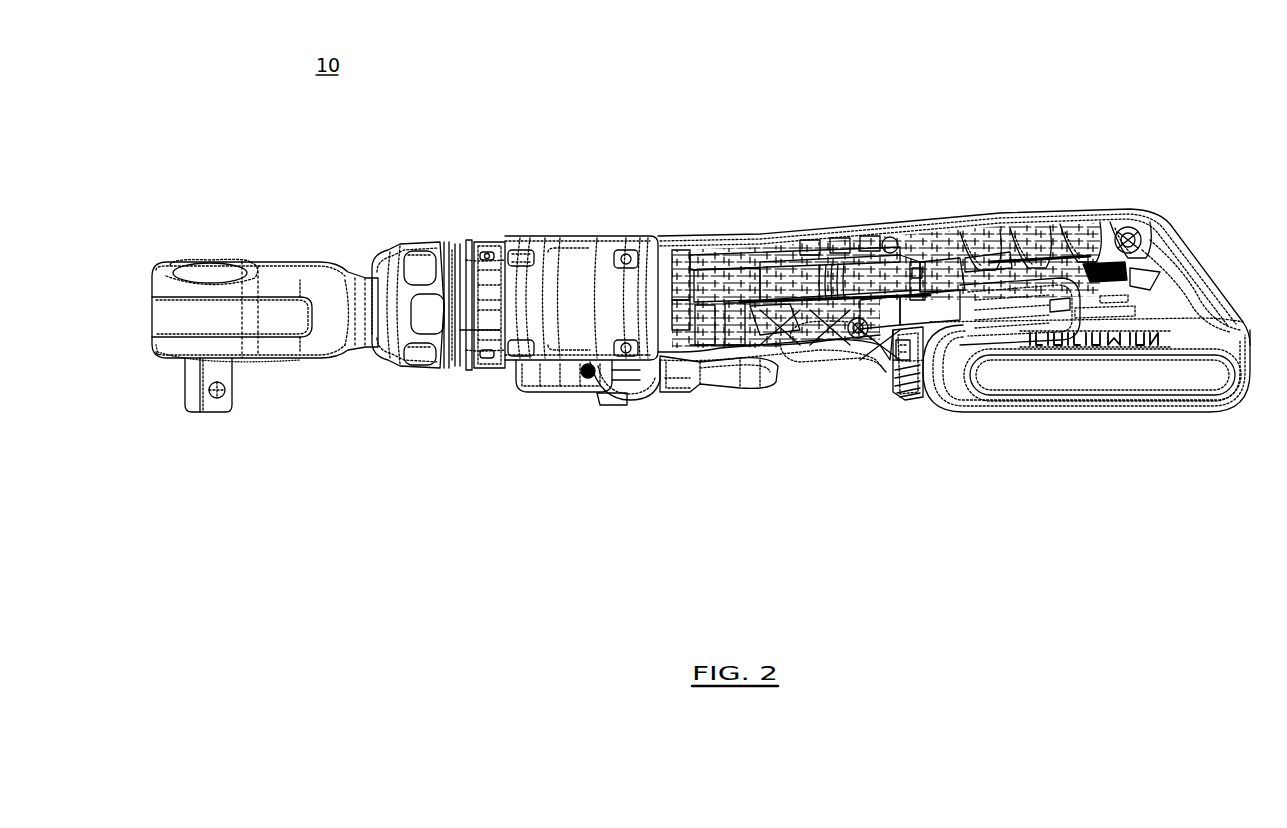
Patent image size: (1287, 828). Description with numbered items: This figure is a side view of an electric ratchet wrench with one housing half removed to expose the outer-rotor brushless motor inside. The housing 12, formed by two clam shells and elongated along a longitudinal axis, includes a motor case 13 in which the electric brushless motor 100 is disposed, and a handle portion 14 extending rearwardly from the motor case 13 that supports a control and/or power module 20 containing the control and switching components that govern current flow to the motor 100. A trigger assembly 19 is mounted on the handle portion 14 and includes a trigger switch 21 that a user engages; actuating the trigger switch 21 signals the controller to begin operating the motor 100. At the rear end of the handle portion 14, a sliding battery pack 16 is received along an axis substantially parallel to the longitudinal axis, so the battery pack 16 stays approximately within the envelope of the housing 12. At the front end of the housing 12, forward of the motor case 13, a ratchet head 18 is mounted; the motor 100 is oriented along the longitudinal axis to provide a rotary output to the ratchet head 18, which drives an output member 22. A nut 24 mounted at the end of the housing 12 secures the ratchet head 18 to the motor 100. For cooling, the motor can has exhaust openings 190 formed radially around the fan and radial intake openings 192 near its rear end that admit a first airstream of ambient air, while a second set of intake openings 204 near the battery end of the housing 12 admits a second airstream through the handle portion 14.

The housing 12 is at (954, 303).
The motor case 13 is at (594, 305).
The handle portion 14 is at (954, 246).
The battery pack 16 is at (1118, 402).
The ratchet head 18 is at (252, 238).
The trigger assembly 19 is at (732, 417).
The control and/or power module 20 is at (858, 242).
The trigger switch 21 is at (722, 386).
The output member 22 is at (214, 406).
The nut 24 is at (420, 262).
The electric brushless motor 100 is at (585, 268).
The exhaust openings 190 is at (497, 370).
The radial intake openings 192 is at (668, 402).
The second set of intake openings 204 is at (990, 242).